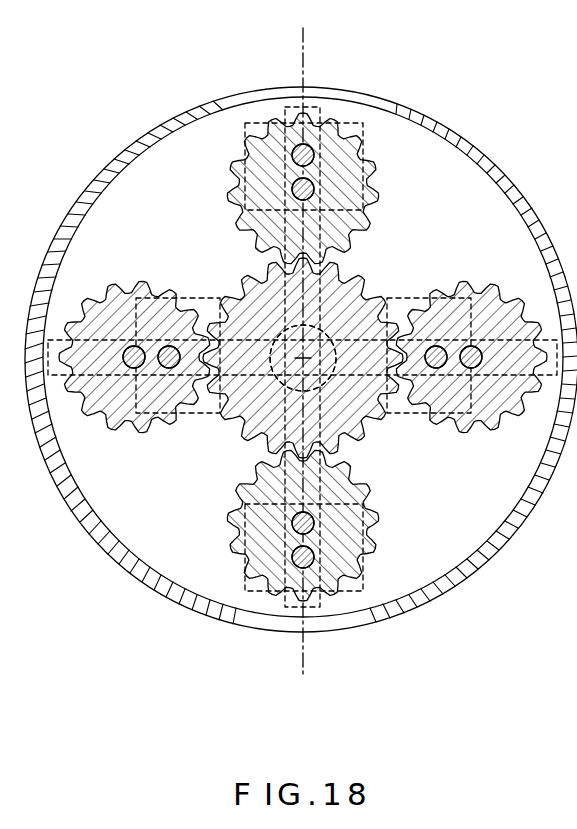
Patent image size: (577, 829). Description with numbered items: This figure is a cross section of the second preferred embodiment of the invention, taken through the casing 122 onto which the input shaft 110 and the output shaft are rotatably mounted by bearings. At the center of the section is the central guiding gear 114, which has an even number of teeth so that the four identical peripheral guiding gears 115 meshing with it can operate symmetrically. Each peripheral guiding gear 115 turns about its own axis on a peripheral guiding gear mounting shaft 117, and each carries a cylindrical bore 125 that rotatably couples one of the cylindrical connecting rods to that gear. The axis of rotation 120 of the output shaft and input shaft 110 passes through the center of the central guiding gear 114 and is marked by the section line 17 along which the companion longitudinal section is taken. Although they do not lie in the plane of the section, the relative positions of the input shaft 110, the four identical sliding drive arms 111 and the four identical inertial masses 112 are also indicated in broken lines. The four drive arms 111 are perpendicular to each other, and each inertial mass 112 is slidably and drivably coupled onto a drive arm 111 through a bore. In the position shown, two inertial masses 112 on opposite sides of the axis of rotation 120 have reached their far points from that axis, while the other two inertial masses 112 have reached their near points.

The section line 17- 17 is at (314, 354).
The input shaft 110 is at (314, 362).
The sliding drive arm 111 is at (281, 335).
The inertial mass 112 is at (363, 123).
The central guiding gear 114 is at (353, 278).
The peripheral guiding gear 115 is at (374, 222).
The peripheral guiding gear mounting shaft 117 is at (292, 194).
The axis of rotation 120 is at (280, 381).
The casing 122 is at (472, 138).
The cylindrical bore 125 is at (293, 163).